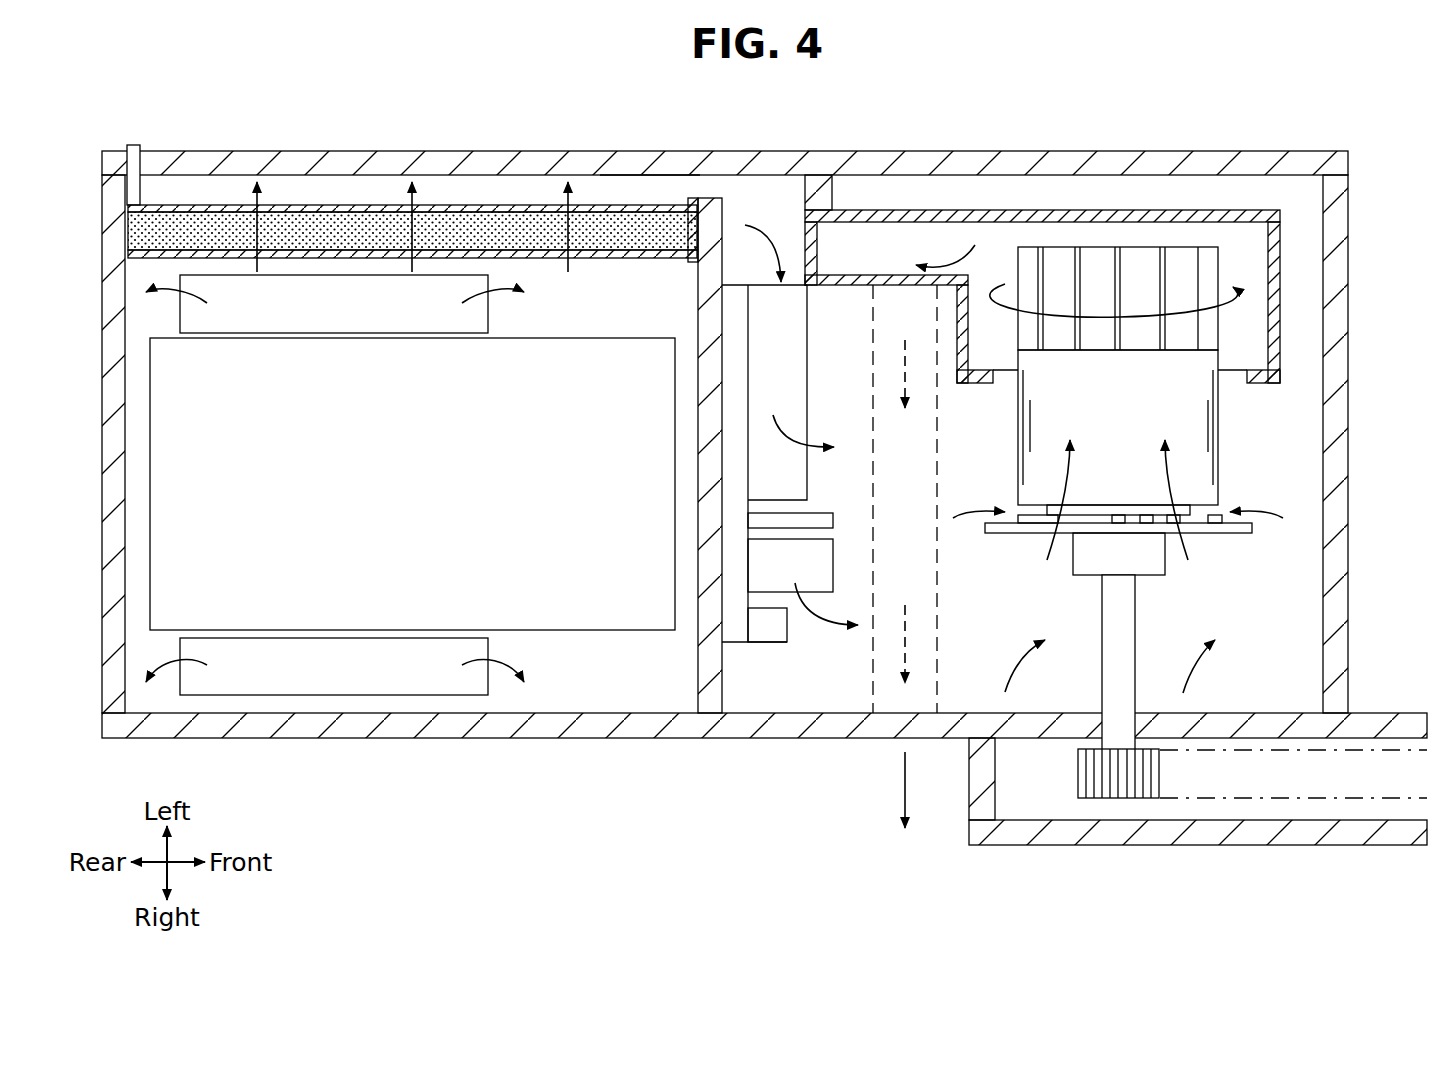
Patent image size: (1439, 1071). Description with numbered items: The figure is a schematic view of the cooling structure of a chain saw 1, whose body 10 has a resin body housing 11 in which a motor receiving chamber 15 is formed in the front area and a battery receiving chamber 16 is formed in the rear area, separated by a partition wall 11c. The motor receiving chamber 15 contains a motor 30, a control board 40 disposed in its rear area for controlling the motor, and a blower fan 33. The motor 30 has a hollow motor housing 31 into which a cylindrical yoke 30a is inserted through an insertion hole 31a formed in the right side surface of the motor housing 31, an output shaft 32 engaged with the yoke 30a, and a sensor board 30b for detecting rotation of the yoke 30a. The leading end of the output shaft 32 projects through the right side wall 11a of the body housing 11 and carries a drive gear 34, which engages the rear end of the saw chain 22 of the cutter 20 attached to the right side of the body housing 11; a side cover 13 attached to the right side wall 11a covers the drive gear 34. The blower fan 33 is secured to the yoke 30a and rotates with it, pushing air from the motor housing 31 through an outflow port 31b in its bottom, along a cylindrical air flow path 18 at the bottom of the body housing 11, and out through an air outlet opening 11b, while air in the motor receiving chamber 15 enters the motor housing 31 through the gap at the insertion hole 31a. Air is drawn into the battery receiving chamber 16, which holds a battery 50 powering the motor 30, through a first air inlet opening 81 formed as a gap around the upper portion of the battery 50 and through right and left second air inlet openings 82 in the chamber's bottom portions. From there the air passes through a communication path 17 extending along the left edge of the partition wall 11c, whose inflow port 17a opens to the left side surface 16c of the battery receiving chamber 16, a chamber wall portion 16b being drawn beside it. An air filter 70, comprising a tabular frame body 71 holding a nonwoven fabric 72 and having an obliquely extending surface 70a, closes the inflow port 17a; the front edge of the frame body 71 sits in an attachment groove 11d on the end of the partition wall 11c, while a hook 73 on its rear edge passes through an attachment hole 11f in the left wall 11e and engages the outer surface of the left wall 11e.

The chain saw 1 is at (764, 484).
The body 10 is at (764, 484).
The body housing 11 is at (1196, 162).
The right side wall 11a is at (1228, 722).
The air outlet opening 11b is at (880, 740).
The partition wall 11c is at (723, 362).
The attachment groove 11d is at (690, 230).
The left wall 11e is at (772, 162).
The attachment hole 11f is at (142, 152).
The side cover 13 is at (1195, 832).
The motor receiving chamber 15 is at (1063, 146).
The battery receiving chamber 16 is at (522, 713).
The casing plate 16b is at (603, 282).
The left side surface 16c is at (486, 176).
The communication path 17 is at (645, 176).
The inflow port 17a is at (691, 203).
The air flow path 18 is at (940, 593).
The cutter 20 is at (1222, 802).
The saw chain 22 is at (1328, 780).
The motor 30 is at (1202, 565).
The yoke 30a is at (1188, 392).
The sensor board 30b is at (1222, 534).
The motor housing 31 is at (1112, 241).
The insertion hole 31a is at (1240, 370).
The outflow port 31b is at (935, 237).
The output shaft 32 is at (1136, 641).
The blower fan 33 is at (1210, 257).
The drive gear 34 is at (1118, 786).
The control board 40 is at (795, 350).
The battery 50 is at (618, 630).
The air filter 70 is at (412, 196).
The surface of the air filter 70a is at (550, 258).
The frame body 71 is at (320, 206).
The nonwoven fabric 72 is at (373, 232).
The hook 73 is at (135, 192).
The first air inlet opening 81 is at (125, 360).
The second air inlet openings 82 is at (442, 290).